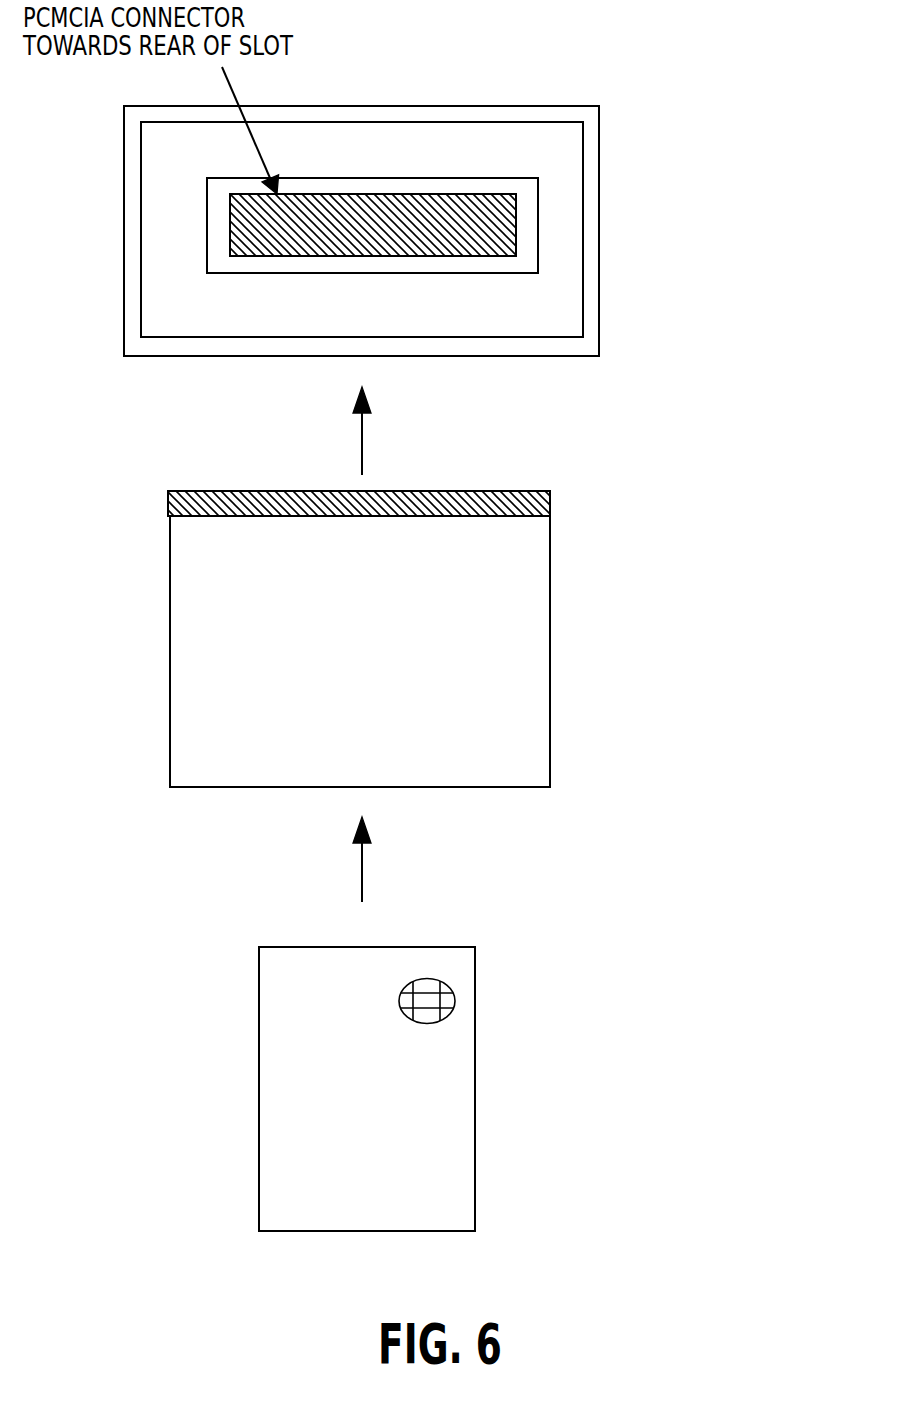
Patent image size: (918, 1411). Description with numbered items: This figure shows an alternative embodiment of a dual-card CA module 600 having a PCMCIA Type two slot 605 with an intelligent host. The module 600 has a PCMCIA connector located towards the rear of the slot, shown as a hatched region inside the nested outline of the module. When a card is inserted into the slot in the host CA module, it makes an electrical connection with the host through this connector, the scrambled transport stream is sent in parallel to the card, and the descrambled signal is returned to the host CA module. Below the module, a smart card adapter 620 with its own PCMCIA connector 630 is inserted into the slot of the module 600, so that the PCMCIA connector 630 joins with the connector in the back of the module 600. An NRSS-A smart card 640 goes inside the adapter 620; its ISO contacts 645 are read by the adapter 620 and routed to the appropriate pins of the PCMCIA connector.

The module 600 is at (124, 238).
The PCMCIA type 2 slot 605 is at (498, 228).
The smart card adapter 620 is at (565, 627).
The PCMCIA connector 630 is at (565, 488).
The NRSS-A smart card 640 is at (475, 1198).
The ISO contacts 645 is at (478, 1003).